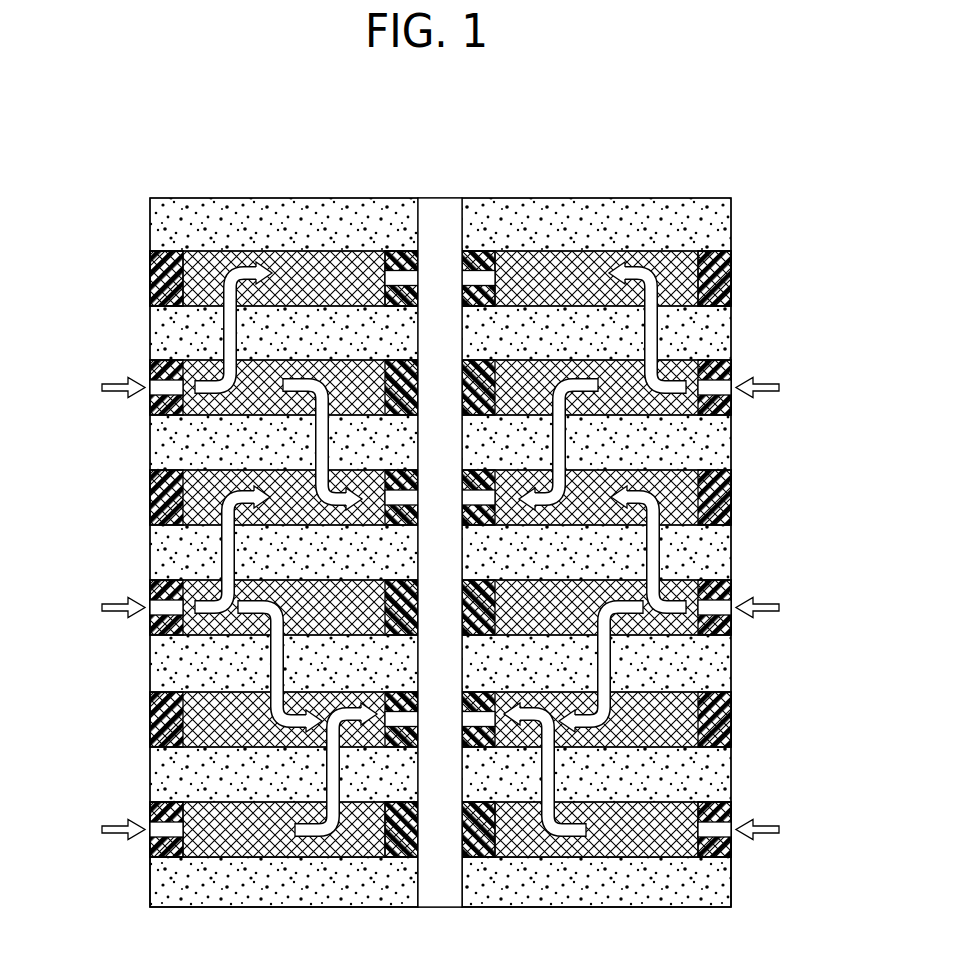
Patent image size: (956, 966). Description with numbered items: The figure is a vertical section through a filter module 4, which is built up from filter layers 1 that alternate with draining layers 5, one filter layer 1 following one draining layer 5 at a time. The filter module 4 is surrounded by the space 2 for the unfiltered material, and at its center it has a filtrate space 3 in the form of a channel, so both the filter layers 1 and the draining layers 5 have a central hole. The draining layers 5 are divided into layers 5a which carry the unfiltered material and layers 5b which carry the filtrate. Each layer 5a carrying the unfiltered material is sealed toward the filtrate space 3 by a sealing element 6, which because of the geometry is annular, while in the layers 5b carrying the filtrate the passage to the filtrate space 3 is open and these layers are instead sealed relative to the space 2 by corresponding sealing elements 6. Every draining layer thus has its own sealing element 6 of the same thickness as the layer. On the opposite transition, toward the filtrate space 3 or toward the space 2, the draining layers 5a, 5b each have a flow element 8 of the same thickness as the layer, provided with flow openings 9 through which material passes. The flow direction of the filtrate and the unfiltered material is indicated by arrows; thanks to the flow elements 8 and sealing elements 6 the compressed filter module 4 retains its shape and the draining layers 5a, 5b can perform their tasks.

The filter layer 1 is at (712, 223).
The space for the unfiltered material 2 is at (61, 545).
The filtrate space 3 is at (441, 198).
The filter module 4 is at (238, 140).
The draining layer 5 is at (498, 554).
The layer which carries the unfiltered material 5a is at (680, 583).
The layer which carries the filtrate 5b is at (680, 473).
The sealing element 6 is at (150, 272).
The flow element 8 is at (171, 857).
The flow opening 9 is at (166, 832).